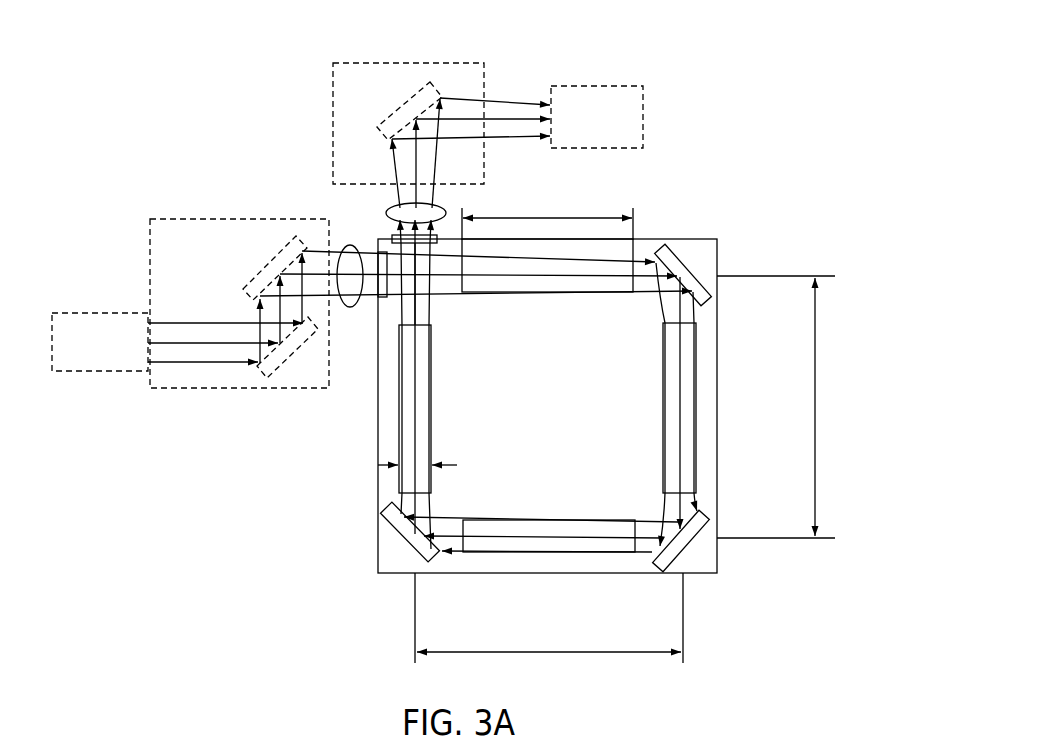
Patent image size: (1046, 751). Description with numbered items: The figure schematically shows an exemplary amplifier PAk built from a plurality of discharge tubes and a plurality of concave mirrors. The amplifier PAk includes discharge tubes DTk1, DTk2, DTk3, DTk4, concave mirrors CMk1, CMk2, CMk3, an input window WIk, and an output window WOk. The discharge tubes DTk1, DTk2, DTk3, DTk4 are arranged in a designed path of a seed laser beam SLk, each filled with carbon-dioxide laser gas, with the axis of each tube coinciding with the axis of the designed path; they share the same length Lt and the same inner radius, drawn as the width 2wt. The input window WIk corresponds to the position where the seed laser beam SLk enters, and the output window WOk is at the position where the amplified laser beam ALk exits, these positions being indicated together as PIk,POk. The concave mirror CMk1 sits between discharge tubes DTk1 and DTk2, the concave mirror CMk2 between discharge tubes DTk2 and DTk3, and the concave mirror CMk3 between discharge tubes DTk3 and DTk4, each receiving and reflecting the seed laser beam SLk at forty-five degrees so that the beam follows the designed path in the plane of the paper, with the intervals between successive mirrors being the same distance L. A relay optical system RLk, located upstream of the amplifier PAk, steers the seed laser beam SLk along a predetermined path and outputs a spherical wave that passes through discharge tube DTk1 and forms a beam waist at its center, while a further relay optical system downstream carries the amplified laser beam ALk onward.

The amplifier PAk is at (640, 186).
The relay optical system RLk is at (240, 233).
The discharge tube DTk1 is at (555, 293).
The discharge tube DTk2 is at (663, 408).
The discharge tube DTk3 is at (552, 520).
The discharge tube DTk4 is at (431, 403).
The concave mirror CMk1 is at (663, 250).
The concave mirror CMk2 is at (685, 545).
The concave mirror CMk3 is at (393, 518).
The input window WIk is at (380, 253).
The output window WOk is at (392, 237).
The amplified laser beam ALk is at (445, 215).
The seed laser beam SLk is at (350, 307).
The entry position and exit position PIk,POk is at (418, 273).
The length Lt is at (547, 214).
The distance L is at (625, 469).
The inner diameter 2wt is at (429, 450).